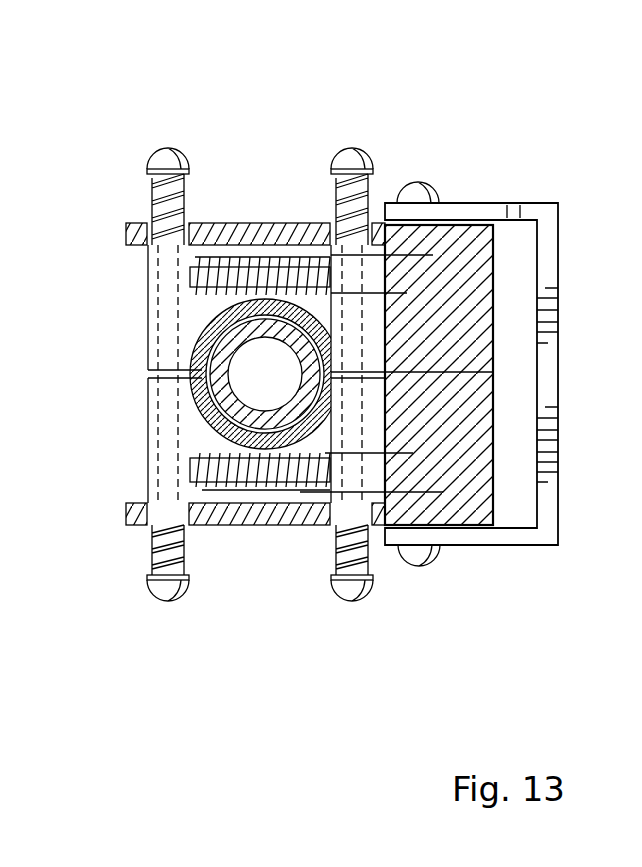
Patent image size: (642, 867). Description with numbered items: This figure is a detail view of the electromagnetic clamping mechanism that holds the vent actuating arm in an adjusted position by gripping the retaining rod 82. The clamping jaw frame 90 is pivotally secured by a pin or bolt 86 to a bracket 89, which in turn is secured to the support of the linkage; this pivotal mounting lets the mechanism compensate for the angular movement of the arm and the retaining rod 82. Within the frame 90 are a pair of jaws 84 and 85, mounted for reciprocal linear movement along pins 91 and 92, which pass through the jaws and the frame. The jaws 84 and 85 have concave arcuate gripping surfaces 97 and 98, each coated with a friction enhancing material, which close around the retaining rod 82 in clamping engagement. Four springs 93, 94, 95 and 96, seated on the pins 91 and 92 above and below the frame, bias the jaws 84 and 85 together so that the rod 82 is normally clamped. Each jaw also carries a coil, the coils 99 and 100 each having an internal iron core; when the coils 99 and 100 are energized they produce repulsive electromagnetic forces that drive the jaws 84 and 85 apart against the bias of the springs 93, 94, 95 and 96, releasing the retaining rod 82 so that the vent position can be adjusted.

The retaining rod 82 is at (148, 370).
The clamping jaw 84 is at (148, 295).
The clamping jaw 85 is at (148, 462).
The bolt 86 is at (433, 192).
The bracket 89 is at (560, 217).
The clamping jaw frame 90 is at (310, 222).
The pin 91 is at (213, 298).
The pin 92 is at (382, 293).
The spring 93 is at (185, 190).
The spring 94 is at (378, 203).
The spring 95 is at (190, 557).
The spring 96 is at (335, 542).
The arcuate gripping surface 97 is at (205, 322).
The arcuate gripping surface 98 is at (202, 410).
The coil 99 is at (190, 277).
The coil 100 is at (190, 472).